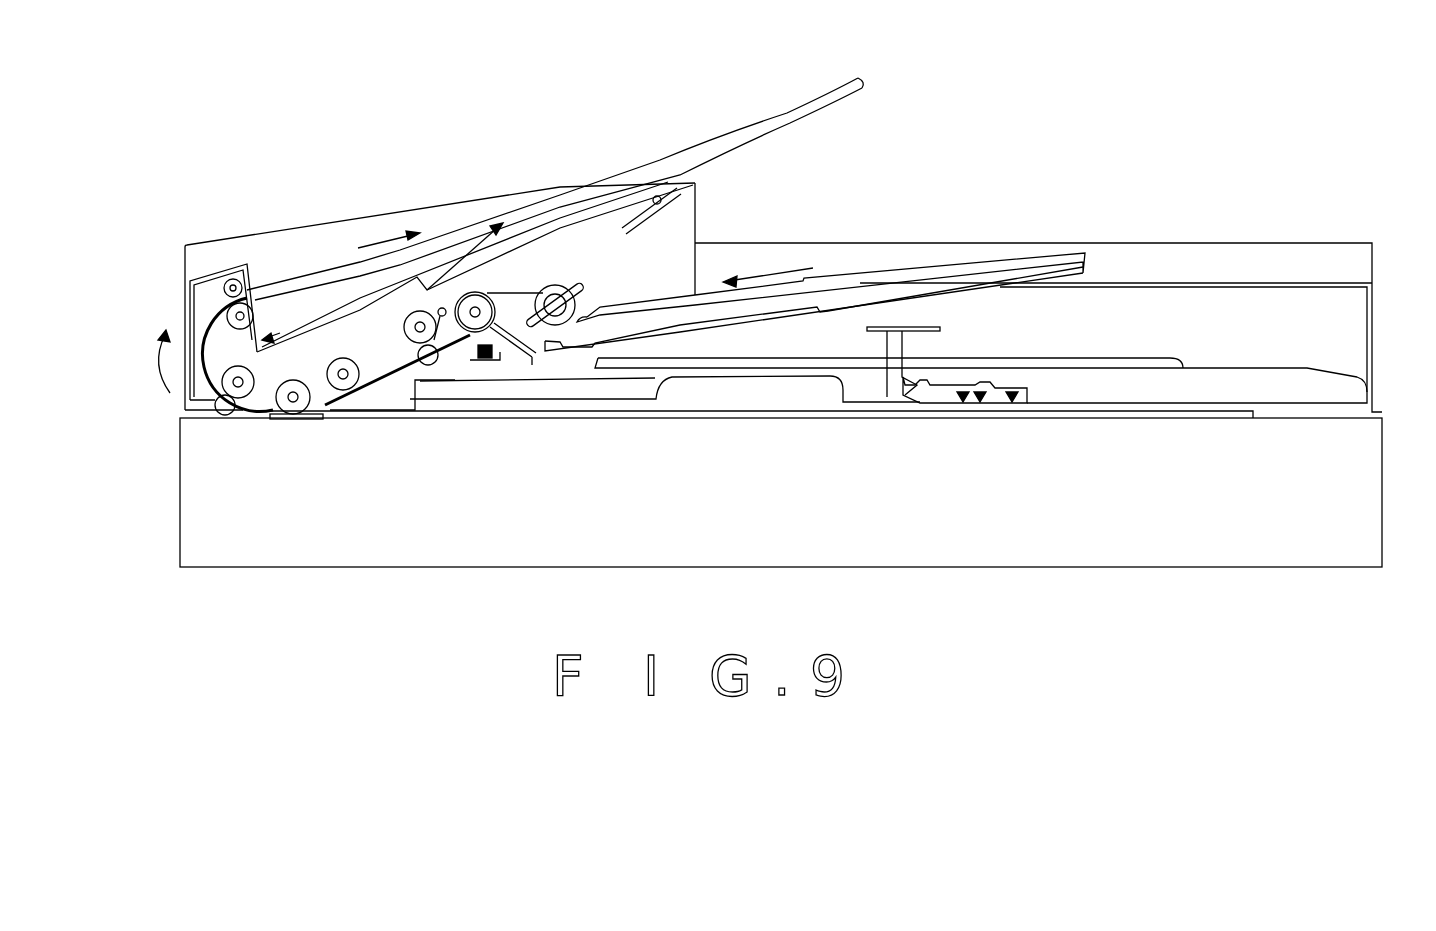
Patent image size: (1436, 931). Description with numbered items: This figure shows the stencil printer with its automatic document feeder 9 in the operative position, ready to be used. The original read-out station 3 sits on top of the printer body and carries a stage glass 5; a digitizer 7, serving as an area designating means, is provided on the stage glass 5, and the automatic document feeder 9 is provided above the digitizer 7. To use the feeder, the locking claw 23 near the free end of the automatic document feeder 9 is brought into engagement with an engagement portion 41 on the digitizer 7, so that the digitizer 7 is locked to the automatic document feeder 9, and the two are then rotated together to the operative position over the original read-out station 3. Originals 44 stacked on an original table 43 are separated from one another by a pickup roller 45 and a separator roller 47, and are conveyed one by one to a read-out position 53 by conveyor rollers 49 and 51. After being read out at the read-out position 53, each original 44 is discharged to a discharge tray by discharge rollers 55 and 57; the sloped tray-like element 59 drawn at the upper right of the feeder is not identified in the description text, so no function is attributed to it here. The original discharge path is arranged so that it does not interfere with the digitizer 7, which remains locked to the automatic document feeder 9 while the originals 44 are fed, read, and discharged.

The original read-out station 3 is at (1355, 518).
The stage glass 5 is at (1172, 425).
The digitizer 7 is at (1340, 385).
The automatic document feeder 9 is at (1333, 256).
The locking claw 23 is at (940, 328).
The engagement portion 41 is at (937, 392).
The original table 43 is at (822, 316).
The originals 44 is at (852, 280).
The pickup roller 45 is at (556, 326).
The separator roller 47 is at (492, 333).
The conveyor roller 49 is at (430, 367).
The conveyor roller 51 is at (363, 388).
The read-out position 53 is at (292, 432).
The discharge roller 55 is at (228, 381).
The discharge roller 57 is at (265, 300).
The document feed tray 59 is at (817, 112).